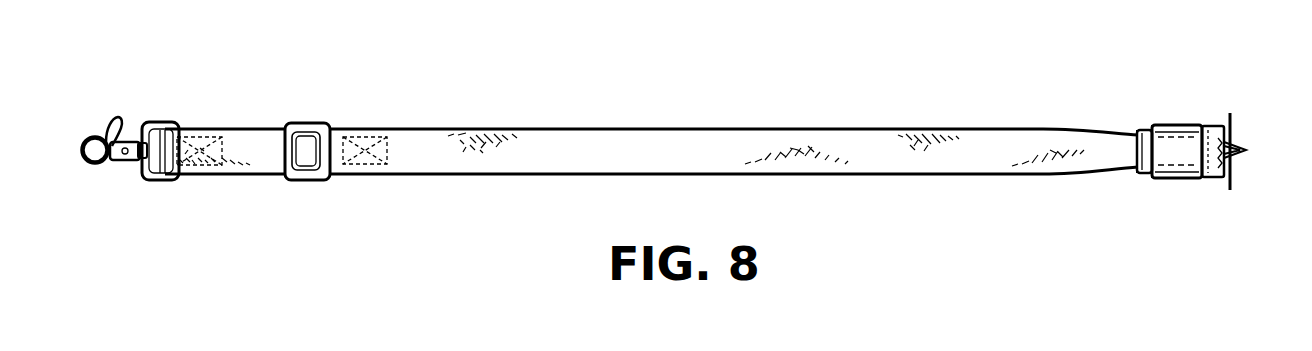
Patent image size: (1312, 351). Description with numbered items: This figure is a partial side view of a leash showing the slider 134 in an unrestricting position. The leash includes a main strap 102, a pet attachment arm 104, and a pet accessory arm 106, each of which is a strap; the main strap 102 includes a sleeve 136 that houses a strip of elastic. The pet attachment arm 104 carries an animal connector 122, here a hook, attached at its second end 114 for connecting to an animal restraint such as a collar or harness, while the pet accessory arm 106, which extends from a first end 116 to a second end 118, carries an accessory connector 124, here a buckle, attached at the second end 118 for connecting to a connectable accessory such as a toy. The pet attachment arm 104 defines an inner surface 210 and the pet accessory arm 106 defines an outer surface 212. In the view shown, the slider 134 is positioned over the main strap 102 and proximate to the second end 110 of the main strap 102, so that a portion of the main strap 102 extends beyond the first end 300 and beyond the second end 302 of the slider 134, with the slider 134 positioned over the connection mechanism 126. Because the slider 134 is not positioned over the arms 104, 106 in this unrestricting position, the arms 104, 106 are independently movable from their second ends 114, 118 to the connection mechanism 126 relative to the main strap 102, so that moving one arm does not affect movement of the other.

The main strap 102 is at (1228, 148).
The pet attachment arm 104 is at (232, 145).
The pet accessory arm 106 is at (518, 155).
The second end of the main strap 110 is at (1146, 178).
The second end of the pet attachment arm 114 is at (172, 147).
The first end of the pet accessory arm 116 is at (1137, 148).
The second end of the pet accessory arm 118 is at (335, 150).
The animal connector 122 is at (117, 130).
The accessory connector 124 is at (300, 148).
The connection mechanism 126 is at (1213, 180).
The slider 134 is at (1176, 140).
The sleeve 136 is at (1232, 165).
The inner surface of the pet attachment arm 210 is at (237, 157).
The outer surface of the pet accessory arm 212 is at (638, 152).
The first end of the slider 300 is at (1139, 135).
The second end of the slider 302 is at (1211, 134).